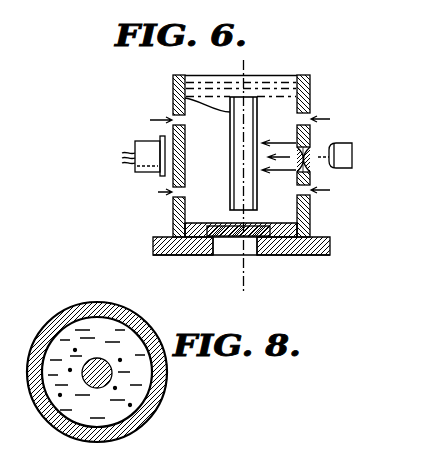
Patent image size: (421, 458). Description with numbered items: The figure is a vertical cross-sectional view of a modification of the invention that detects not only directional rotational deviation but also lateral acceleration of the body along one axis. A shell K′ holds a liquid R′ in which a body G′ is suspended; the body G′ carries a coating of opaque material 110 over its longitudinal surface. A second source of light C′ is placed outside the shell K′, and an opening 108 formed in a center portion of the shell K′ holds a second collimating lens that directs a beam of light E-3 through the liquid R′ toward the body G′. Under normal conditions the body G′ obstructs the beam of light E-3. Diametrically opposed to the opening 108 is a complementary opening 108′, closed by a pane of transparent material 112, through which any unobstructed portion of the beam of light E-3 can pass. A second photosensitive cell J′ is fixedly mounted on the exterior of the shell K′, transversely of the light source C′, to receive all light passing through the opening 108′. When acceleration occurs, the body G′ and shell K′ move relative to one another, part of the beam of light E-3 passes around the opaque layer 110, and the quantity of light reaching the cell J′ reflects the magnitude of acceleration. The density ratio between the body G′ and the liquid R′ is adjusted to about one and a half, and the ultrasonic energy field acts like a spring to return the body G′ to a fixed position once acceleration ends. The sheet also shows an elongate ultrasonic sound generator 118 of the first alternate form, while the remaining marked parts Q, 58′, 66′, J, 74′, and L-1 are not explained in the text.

In FIG. 6, the shell K′ is at (307, 84).
In FIG. 6, the body G′ is at (185, 98).
In FIG. 6, the coating of opaque material 110 is at (231, 128).
In FIG. 6, the complementary opening 108′ is at (185, 150).
In FIG. 6, the pane of transparent material 112 is at (187, 166).
In FIG. 6, the second photosensitive cell J′ is at (146, 176).
In FIG. 6, the port Q is at (307, 118).
In FIG. 6, the opening 108 is at (310, 147).
In FIG. 6, the second source of light C′ is at (345, 143).
In FIG. 6, the liquid R′ is at (282, 129).
In FIG. 6, the beam of light E-3 is at (285, 170).
In FIG. 6, the outlet port 58′ is at (300, 227).
In FIG. 6, the base flange 66′ is at (330, 250).
In FIG. 6, the plate J is at (232, 248).
In FIG. 6, the opening 74′ is at (258, 238).
In FIG. 6, the base L-1 is at (196, 238).
In FIG. 8, the elongate ultrasonic sound generator 118 is at (97, 358).